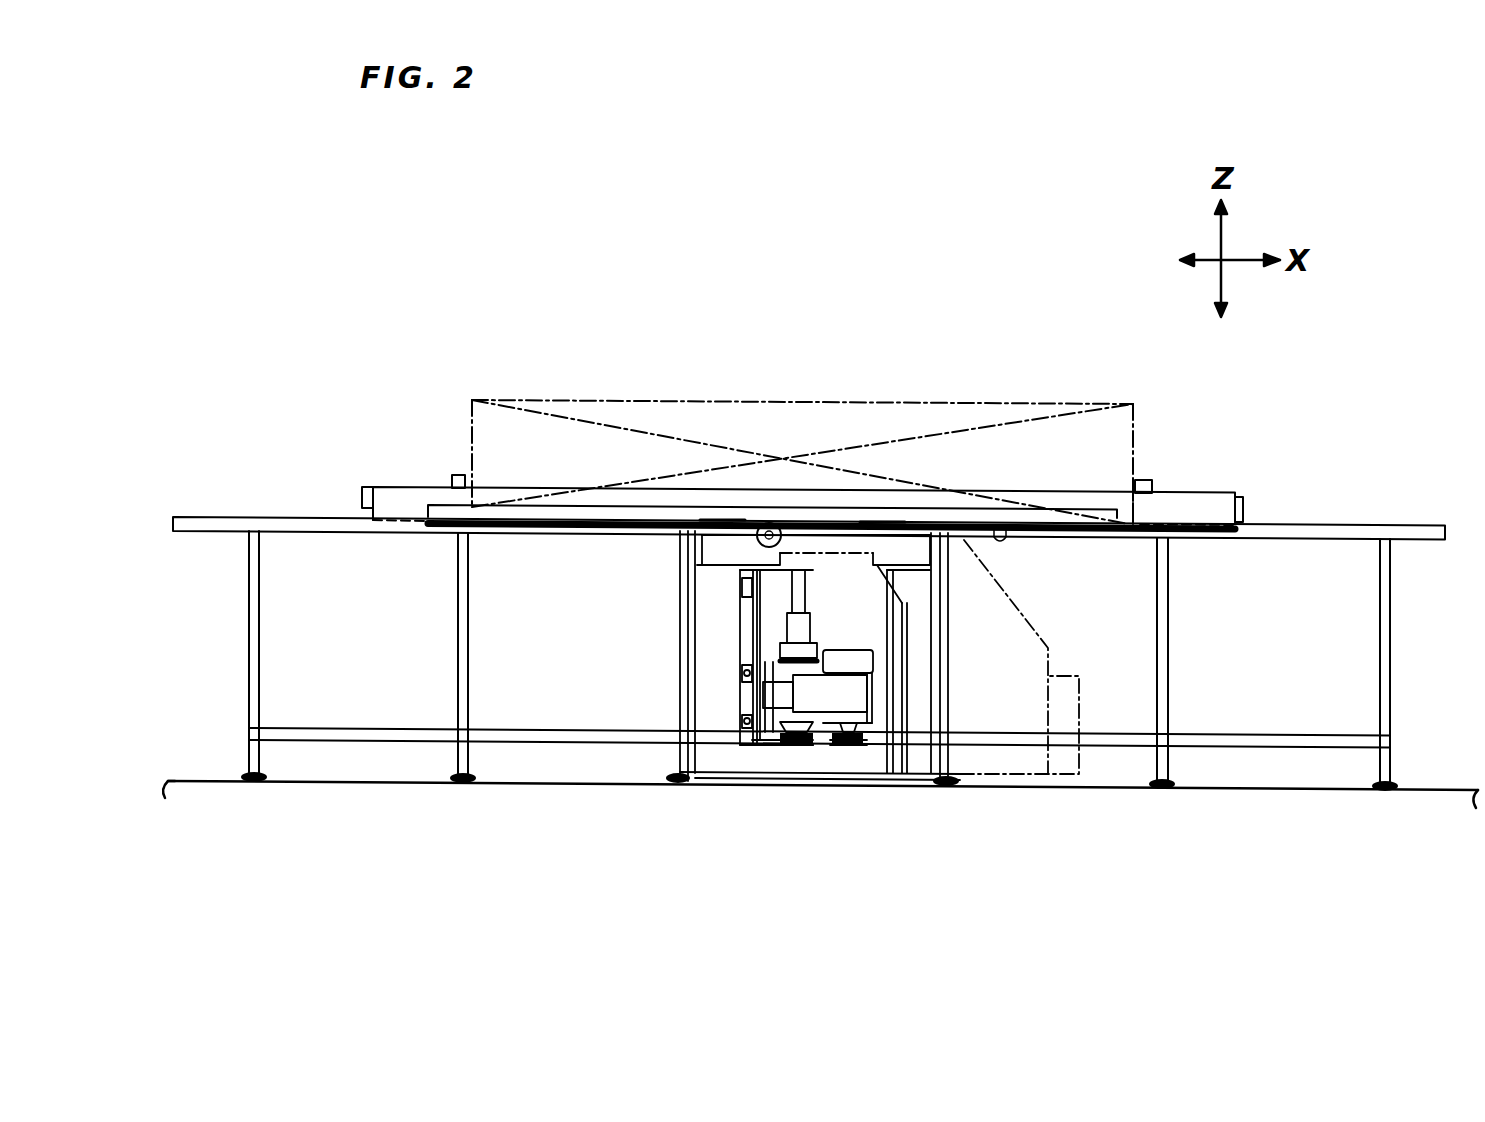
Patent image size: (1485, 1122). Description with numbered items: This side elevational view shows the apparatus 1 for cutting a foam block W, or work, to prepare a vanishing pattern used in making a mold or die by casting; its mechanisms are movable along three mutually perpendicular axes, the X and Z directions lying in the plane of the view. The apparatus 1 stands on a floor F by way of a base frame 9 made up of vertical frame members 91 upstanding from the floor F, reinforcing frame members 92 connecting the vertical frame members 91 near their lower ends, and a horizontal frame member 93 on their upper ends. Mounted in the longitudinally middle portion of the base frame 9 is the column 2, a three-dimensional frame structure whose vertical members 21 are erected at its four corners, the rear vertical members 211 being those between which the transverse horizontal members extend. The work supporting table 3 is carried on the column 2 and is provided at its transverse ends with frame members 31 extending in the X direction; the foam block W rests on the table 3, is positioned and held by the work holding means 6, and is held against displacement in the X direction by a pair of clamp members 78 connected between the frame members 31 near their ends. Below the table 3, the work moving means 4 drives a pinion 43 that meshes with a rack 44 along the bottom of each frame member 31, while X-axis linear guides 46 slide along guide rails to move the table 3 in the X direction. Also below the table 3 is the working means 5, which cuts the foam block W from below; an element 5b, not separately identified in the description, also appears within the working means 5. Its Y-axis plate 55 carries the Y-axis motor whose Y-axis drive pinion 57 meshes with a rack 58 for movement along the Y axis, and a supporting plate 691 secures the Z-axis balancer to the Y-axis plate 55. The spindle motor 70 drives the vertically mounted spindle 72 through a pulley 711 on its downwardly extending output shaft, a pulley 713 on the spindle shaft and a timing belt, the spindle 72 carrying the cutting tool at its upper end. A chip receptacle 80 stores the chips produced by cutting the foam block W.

The apparatus 1 is at (1286, 451).
The column 2 is at (687, 675).
The vertical members 21 is at (920, 617).
The rear vertical members 211 is at (713, 588).
The work supporting table 3 is at (821, 449).
The frame members 31 is at (1214, 512).
The work moving means 4 is at (632, 532).
The pinion 43 is at (772, 522).
The rack 44 is at (1015, 533).
The X-axis linear guides 46 is at (722, 520).
The working means 5 is at (829, 758).
The motor 5b is at (822, 712).
The Y-axis plate 55 is at (747, 622).
The Y-axis drive pinion 57 is at (740, 717).
The rack 58 is at (740, 675).
The work holding means 6 is at (1145, 475).
The supporting plate 691 is at (752, 748).
The spindle motor 70 is at (853, 650).
The pulley 711 is at (867, 740).
The pulley 713 is at (782, 747).
The spindle 72 is at (810, 627).
The clamp members 78 is at (455, 475).
The chip receptacle 80 is at (1034, 664).
The base frame 9 is at (856, 624).
The vertical frame members 91 is at (1384, 696).
The reinforcing frame members 92 is at (1207, 748).
The horizontal frame member 93 is at (1407, 526).
The foam block W is at (810, 412).
The floor F is at (1447, 792).